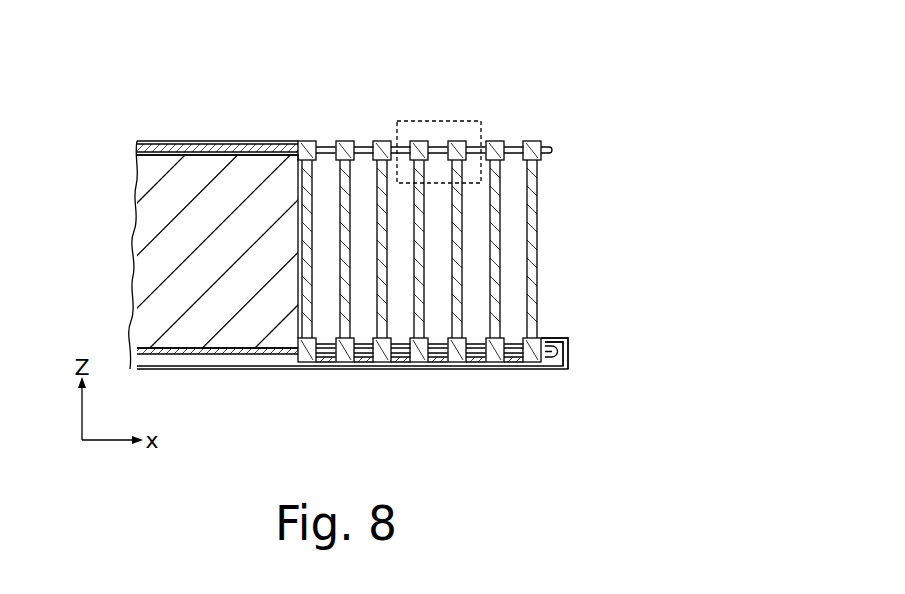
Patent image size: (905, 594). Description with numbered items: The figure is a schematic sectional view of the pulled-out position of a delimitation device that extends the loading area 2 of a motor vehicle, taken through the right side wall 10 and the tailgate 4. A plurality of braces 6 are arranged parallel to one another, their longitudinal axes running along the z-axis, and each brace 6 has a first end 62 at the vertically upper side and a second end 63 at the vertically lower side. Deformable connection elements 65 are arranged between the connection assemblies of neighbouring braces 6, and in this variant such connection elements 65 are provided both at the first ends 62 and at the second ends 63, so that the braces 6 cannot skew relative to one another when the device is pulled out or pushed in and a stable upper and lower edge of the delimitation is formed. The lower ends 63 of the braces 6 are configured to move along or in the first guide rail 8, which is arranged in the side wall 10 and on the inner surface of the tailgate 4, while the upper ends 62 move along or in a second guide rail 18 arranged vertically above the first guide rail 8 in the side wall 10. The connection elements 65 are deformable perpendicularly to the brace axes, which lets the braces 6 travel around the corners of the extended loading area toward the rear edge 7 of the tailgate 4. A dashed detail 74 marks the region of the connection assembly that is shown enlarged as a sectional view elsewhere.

The loading area 2 is at (566, 270).
The tailgate 4 is at (556, 370).
The braces 6 is at (533, 230).
The rear edge 7 is at (566, 350).
The guide rail 8 is at (181, 356).
The right side wall 10 is at (150, 228).
The second guide rail 18 is at (207, 148).
The first end 62 is at (383, 140).
The second end 63 is at (385, 350).
The connection elements 65 is at (514, 140).
The detail 74 is at (442, 138).